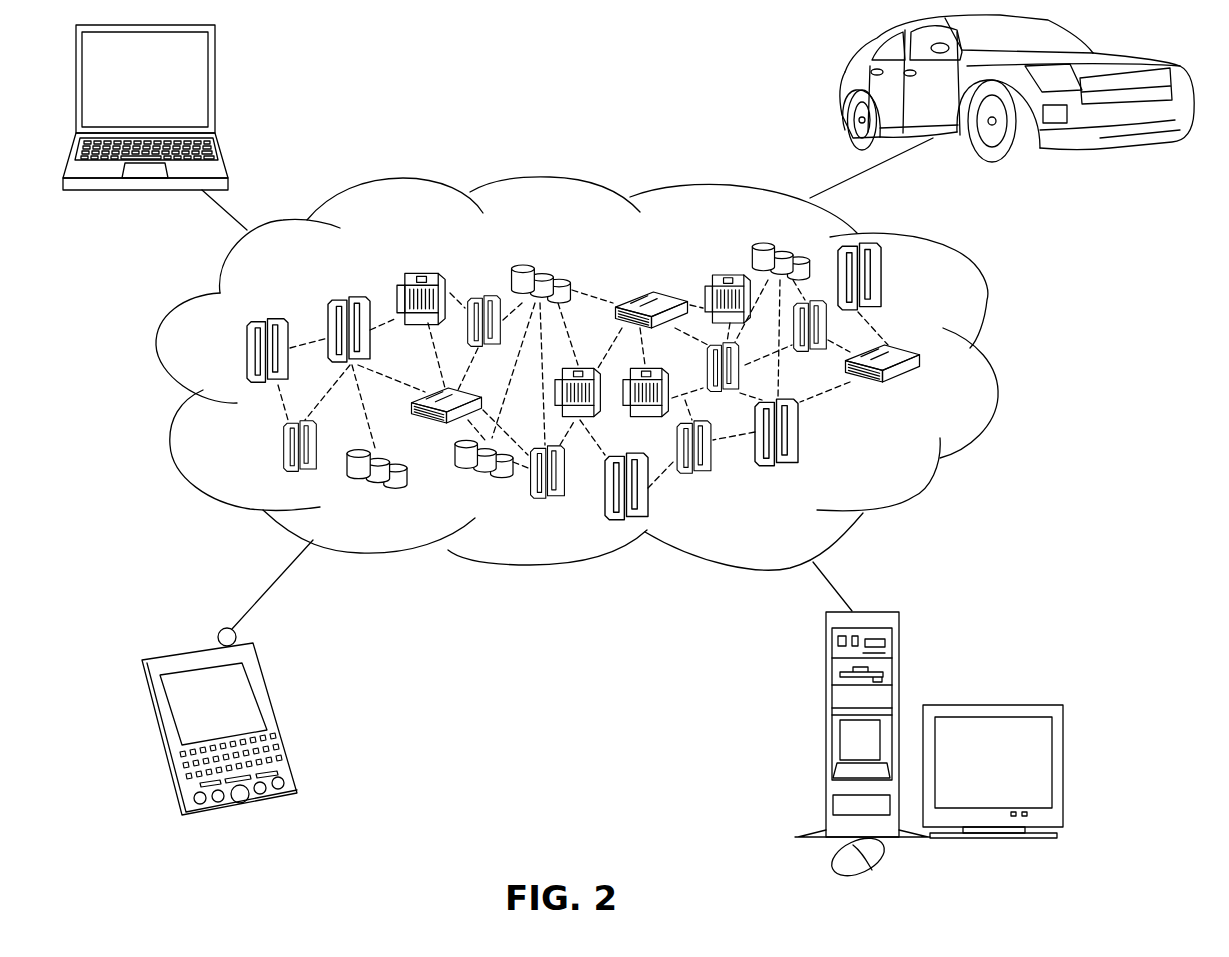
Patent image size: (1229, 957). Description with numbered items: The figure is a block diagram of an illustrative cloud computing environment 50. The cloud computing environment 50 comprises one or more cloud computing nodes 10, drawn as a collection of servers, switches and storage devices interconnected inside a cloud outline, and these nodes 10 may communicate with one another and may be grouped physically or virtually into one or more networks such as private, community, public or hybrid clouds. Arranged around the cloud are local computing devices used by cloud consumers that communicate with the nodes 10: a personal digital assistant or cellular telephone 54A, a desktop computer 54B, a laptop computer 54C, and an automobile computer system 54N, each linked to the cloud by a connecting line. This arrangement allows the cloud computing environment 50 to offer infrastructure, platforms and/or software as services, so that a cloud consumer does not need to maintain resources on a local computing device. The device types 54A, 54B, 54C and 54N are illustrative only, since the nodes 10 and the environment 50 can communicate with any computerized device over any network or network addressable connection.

The cloud computing node 10 is at (900, 461).
The cloud computing environment 50 is at (990, 363).
The personal digital assistant (PDA) or cellular telephone 54A is at (267, 685).
The desktop computer 54B is at (826, 672).
The laptop computer 54C is at (215, 62).
The automobile computer system 54N is at (846, 77).